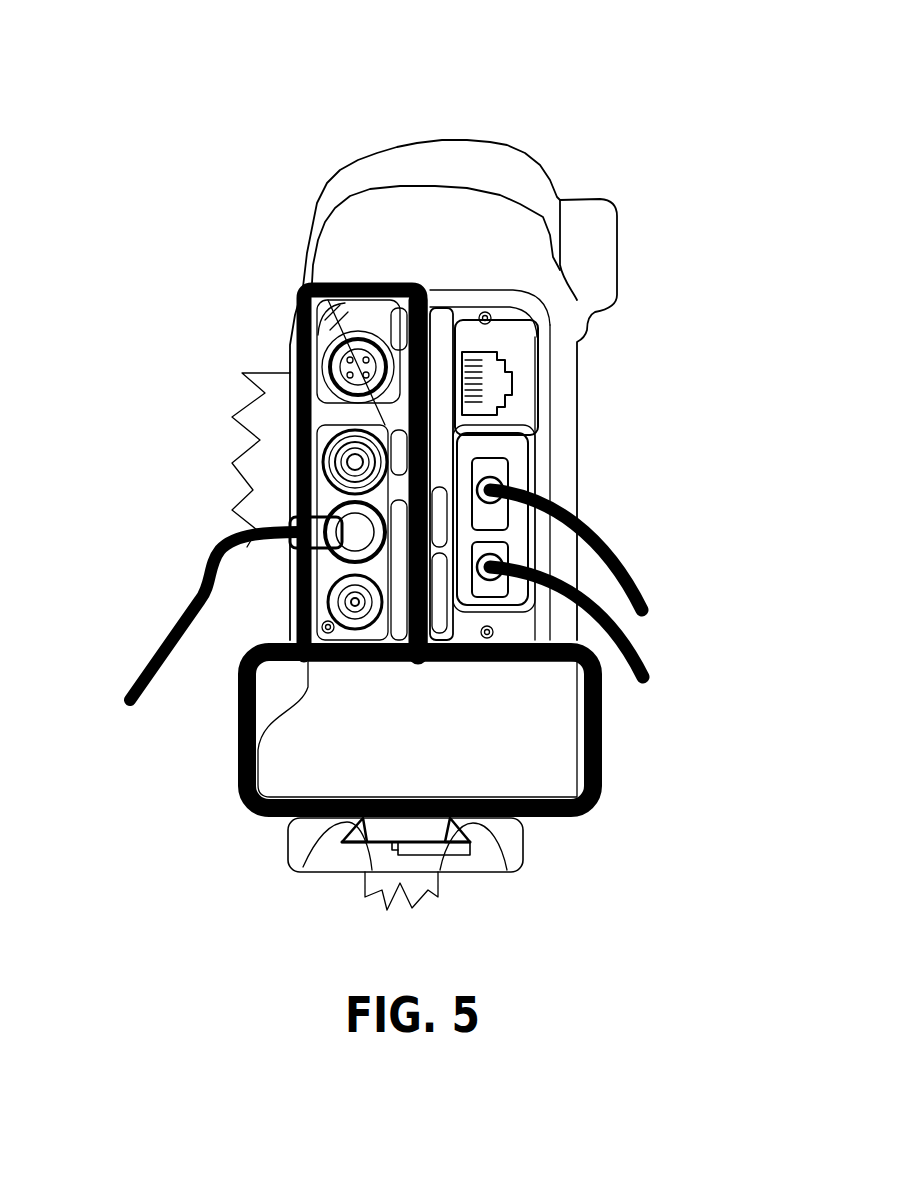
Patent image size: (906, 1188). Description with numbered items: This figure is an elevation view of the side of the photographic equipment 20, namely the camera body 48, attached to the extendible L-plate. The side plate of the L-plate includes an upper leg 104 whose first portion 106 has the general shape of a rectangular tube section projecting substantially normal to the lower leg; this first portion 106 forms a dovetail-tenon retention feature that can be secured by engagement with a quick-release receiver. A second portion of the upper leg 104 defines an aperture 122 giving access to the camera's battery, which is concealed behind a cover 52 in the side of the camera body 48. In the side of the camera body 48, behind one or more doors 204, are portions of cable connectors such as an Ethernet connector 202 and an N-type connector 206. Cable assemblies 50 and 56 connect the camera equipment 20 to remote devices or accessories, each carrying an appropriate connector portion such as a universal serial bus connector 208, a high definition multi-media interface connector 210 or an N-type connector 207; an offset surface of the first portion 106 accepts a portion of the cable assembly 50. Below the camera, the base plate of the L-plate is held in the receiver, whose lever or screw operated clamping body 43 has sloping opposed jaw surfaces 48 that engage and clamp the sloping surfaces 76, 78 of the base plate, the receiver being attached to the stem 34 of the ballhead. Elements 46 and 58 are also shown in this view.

The photographic equipment 20 is at (532, 90).
The stem 34 is at (380, 910).
The clamping body 43 is at (290, 862).
The slot 46 is at (353, 873).
The camera body 48 is at (578, 415).
The cable assembly 50 is at (138, 680).
The cover 52 is at (441, 780).
The cable assembly 56 is at (640, 577).
The cable 58 is at (640, 650).
The sloping surface 76 is at (500, 853).
The sloping surface 78 is at (320, 860).
The upper leg 104 is at (565, 820).
The first portion 106 is at (340, 280).
The aperture 122 is at (533, 757).
The Ethernet connector 202 is at (510, 363).
The door 204 is at (457, 310).
The N-type connector 206 is at (293, 430).
The N-type connector 207 is at (295, 575).
The universal serial bus (USB) connector 208 is at (508, 473).
The high definition multi-media interface (HDMI) connector 210 is at (508, 547).